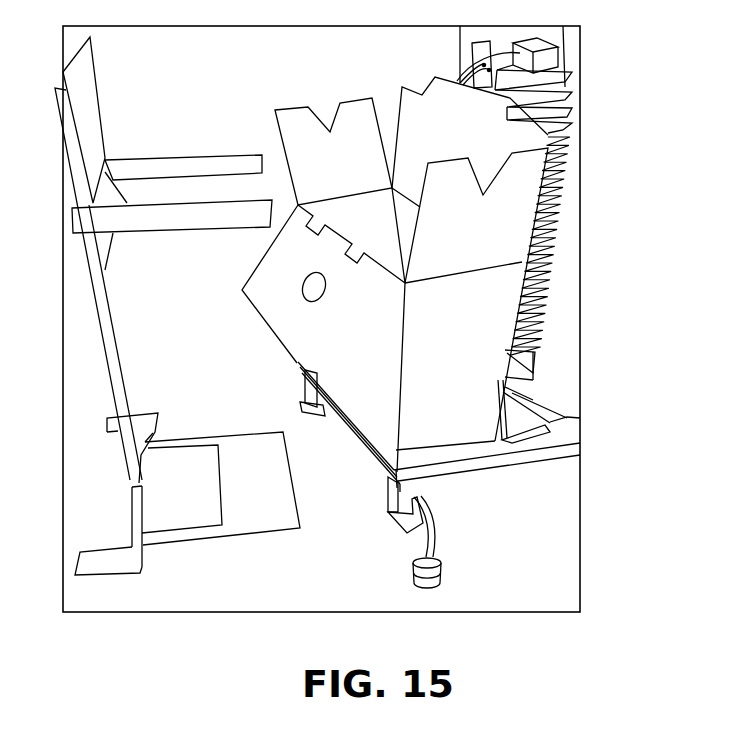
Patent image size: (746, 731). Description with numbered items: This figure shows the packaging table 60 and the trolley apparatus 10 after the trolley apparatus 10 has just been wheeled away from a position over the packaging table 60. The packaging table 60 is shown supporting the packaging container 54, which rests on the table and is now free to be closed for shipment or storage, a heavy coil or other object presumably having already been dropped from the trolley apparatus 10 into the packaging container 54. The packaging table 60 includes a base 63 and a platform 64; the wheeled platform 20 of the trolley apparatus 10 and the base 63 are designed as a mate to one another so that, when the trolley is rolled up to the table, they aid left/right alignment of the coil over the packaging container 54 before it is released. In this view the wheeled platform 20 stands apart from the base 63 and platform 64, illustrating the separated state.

The trolley apparatus 10 is at (172, 334).
The wheeled platform 20 is at (260, 515).
The packaging container 54 is at (486, 306).
The packaging table 60 is at (565, 366).
The base 63 is at (387, 497).
The platform 64 is at (443, 460).